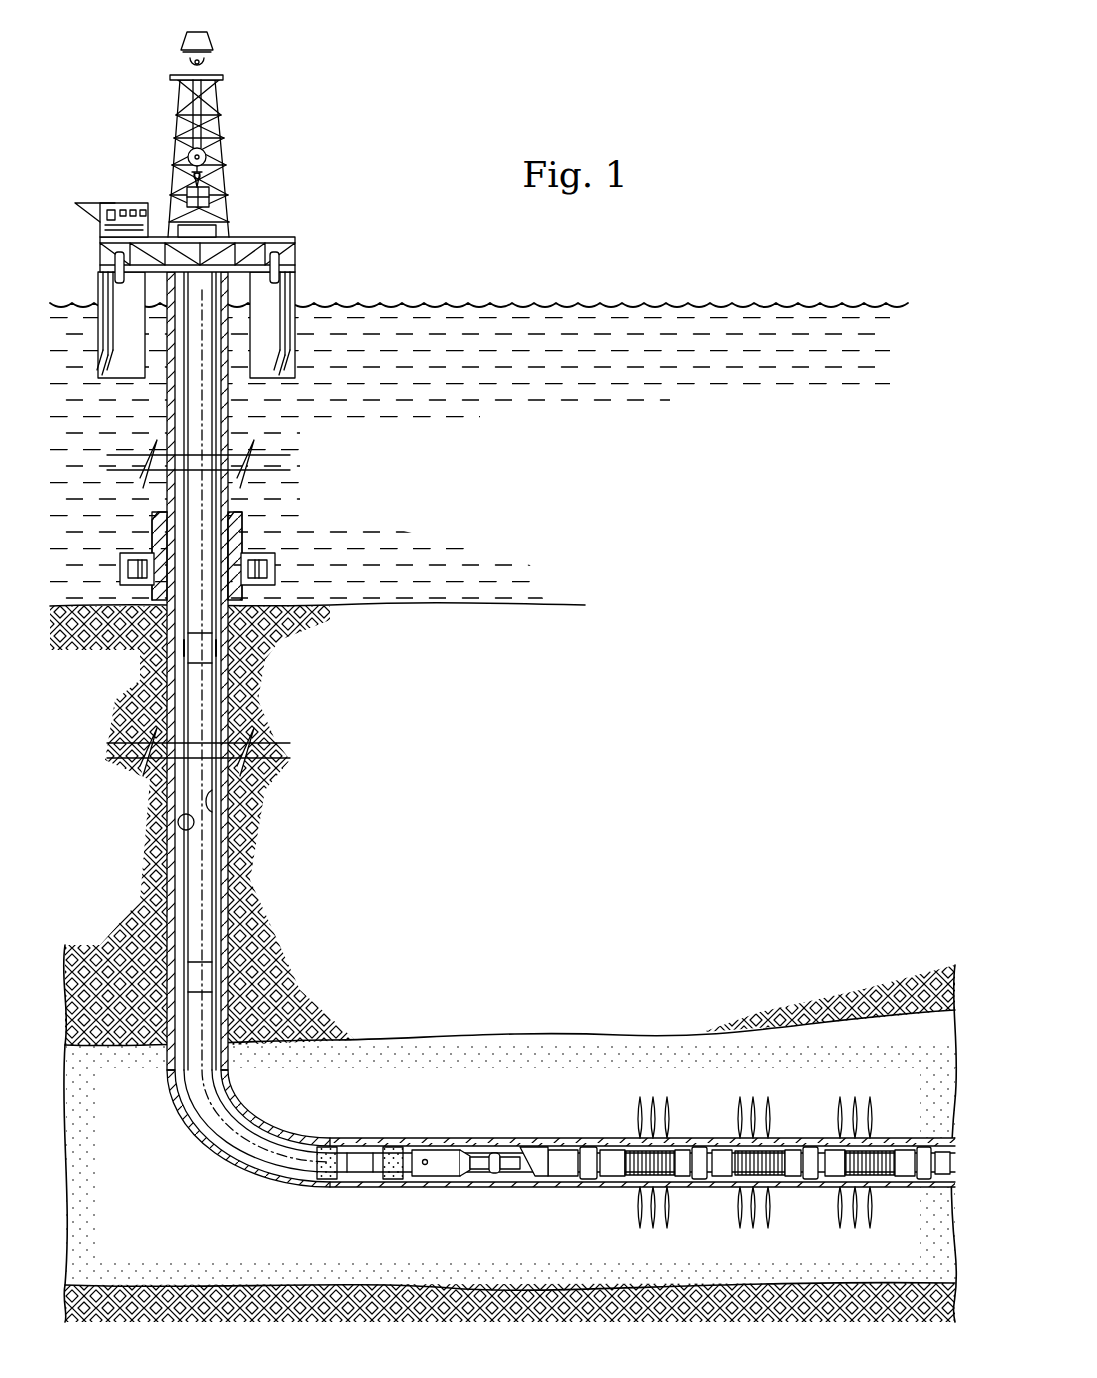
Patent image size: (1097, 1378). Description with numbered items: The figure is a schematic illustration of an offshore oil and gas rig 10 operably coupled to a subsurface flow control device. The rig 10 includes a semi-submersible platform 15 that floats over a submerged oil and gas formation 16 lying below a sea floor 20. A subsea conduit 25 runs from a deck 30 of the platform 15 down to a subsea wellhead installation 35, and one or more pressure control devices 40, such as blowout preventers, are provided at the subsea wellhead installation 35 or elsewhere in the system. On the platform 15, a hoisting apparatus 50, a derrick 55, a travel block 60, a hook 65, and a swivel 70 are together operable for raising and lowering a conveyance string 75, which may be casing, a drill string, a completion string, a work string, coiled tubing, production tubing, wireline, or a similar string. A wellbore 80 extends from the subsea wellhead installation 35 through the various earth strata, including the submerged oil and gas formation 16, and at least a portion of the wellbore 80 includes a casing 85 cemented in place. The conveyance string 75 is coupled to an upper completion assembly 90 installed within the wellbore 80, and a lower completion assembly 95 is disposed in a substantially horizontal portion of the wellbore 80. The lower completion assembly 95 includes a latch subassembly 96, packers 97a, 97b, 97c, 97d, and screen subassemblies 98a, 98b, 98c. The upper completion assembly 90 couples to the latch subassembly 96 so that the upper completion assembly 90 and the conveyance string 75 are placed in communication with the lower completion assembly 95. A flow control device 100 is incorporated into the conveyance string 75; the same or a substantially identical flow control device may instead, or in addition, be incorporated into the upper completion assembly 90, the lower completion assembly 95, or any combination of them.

The offshore oil and gas rig 10 is at (310, 128).
The semi-submersible platform 15 is at (297, 240).
The submerged oil and gas formation 16 is at (128, 1200).
The sea floor 20 is at (558, 604).
The subsea conduit 25 is at (228, 418).
The deck 30 is at (298, 268).
The subsea wellhead installation 35 is at (148, 535).
The pressure control device 40 is at (262, 565).
The hoisting apparatus 50 is at (218, 195).
The derrick 55 is at (180, 58).
The travel block 60 is at (184, 153).
The hook 65 is at (190, 178).
The swivel 70 is at (212, 158).
The conveyance string 75 is at (190, 620).
The wellbore 80 is at (212, 800).
The casing 85 is at (178, 822).
The upper completion assembly 90 is at (398, 1130).
The lower completion assembly 95 is at (614, 1200).
The latch subassembly 96 is at (533, 1130).
The packer 97a is at (586, 1145).
The packer 97b is at (700, 1180).
The packer 97c is at (810, 1180).
The packer 97d is at (924, 1180).
The screen subassembly 98a is at (684, 1128).
The screen subassembly 98b is at (784, 1128).
The screen subassembly 98c is at (885, 1128).
The flow control device 100 is at (204, 648).